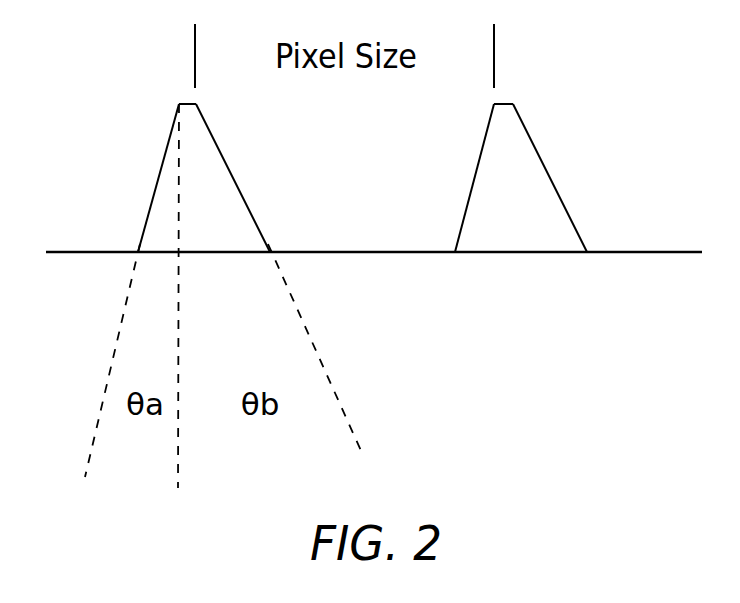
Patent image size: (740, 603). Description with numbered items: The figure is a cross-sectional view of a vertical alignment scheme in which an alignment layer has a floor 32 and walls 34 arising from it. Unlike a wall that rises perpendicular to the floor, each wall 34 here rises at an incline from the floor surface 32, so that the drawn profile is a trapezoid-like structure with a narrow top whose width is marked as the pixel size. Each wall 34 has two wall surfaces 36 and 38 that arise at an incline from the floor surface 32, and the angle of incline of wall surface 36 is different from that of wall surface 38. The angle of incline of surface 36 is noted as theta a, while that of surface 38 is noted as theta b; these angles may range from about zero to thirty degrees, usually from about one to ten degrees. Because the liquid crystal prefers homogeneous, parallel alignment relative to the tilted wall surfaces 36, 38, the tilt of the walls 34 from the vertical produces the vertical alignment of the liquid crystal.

The floor 32 is at (354, 328).
The walls 34 is at (234, 236).
The wall surface 36 is at (300, 178).
The wall surface 38 is at (394, 178).